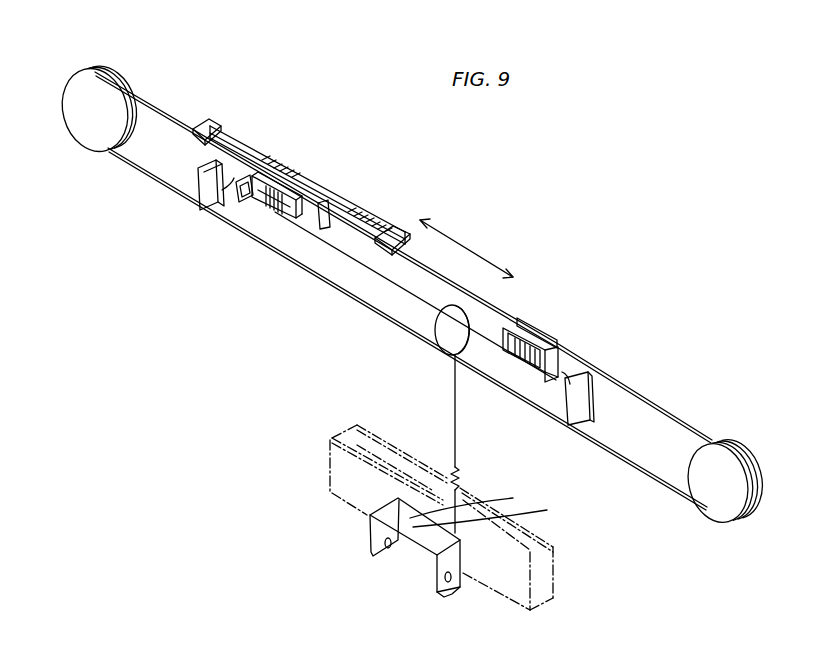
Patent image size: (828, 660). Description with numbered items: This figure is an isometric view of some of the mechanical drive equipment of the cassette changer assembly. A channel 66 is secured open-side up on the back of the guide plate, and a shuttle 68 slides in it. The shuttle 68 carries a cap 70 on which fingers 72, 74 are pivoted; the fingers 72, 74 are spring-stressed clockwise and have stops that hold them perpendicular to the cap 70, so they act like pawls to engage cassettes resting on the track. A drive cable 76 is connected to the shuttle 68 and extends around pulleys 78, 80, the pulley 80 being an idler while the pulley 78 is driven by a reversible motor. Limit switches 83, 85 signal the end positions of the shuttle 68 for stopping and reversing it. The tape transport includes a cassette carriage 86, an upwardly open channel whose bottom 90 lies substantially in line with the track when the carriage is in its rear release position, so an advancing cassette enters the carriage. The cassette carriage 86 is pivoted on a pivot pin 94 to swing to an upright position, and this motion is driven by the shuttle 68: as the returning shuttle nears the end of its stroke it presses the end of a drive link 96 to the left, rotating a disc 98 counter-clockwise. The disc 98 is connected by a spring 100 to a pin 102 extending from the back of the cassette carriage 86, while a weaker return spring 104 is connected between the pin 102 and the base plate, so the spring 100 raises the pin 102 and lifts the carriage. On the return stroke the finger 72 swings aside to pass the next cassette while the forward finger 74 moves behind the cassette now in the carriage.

The channel 66 is at (289, 212).
The shuttle 68 is at (290, 188).
The cap 70 is at (326, 190).
The finger 72 is at (217, 131).
The finger 74 is at (394, 230).
The drive cable 76 is at (164, 114).
The pulley 78 is at (104, 82).
The idler pulley 80 is at (720, 458).
The limit switch 83 is at (209, 212).
The limit switch 85 is at (569, 425).
The cassette carriage 86 is at (356, 510).
The bottom 90 is at (540, 598).
The pivot pin 94 is at (388, 548).
The drive link 96 is at (247, 200).
The disc 98 is at (446, 337).
The spring 100 is at (460, 455).
The pin 102 is at (462, 508).
The return spring 104 is at (462, 526).